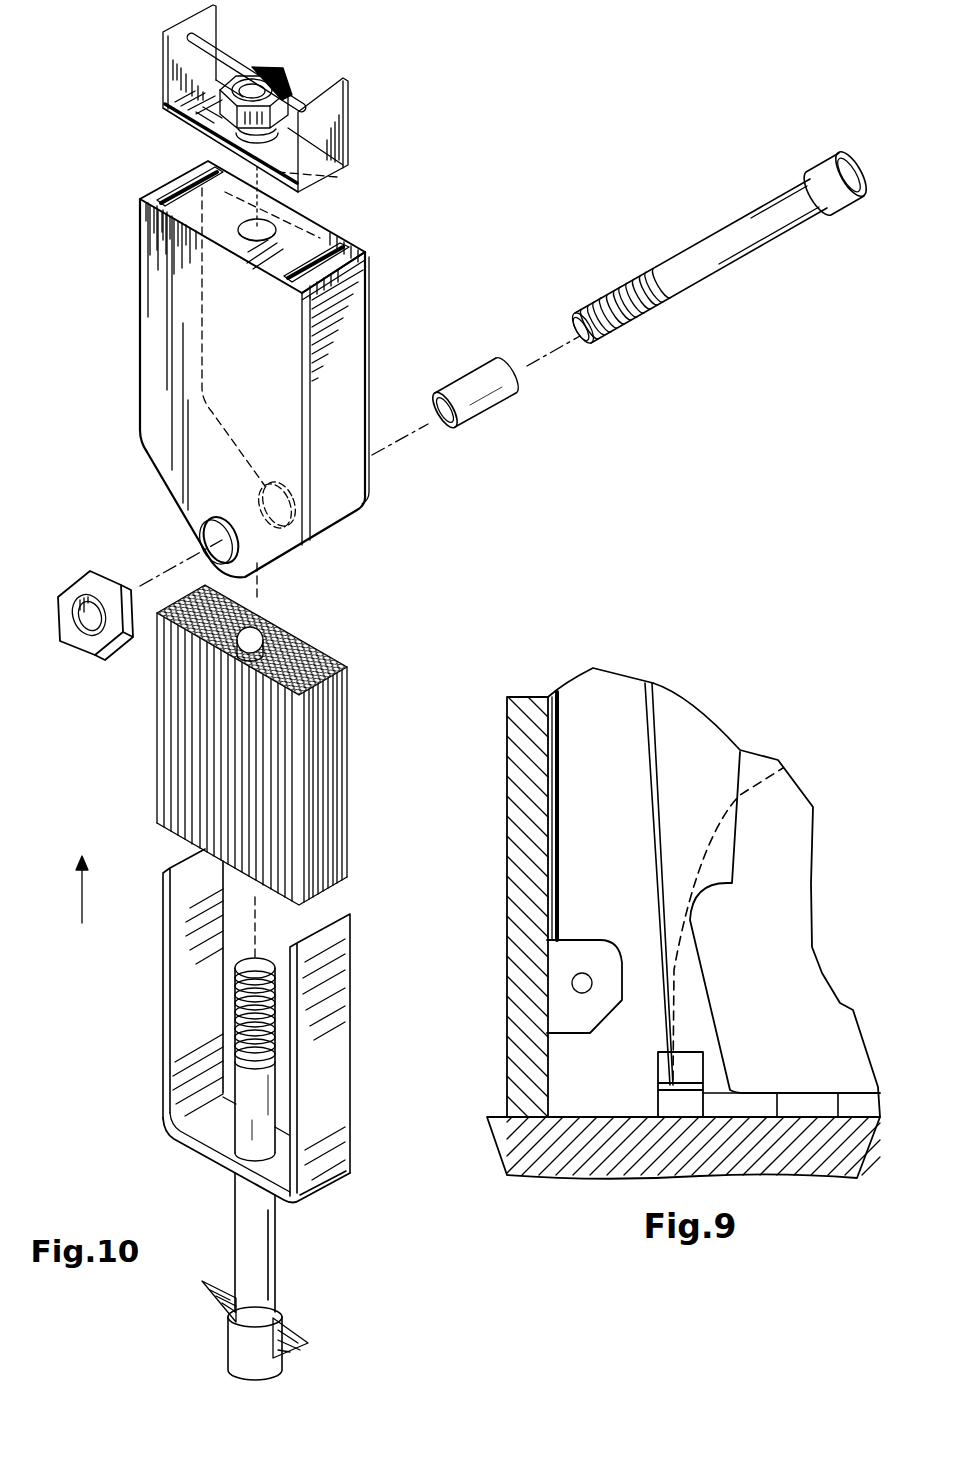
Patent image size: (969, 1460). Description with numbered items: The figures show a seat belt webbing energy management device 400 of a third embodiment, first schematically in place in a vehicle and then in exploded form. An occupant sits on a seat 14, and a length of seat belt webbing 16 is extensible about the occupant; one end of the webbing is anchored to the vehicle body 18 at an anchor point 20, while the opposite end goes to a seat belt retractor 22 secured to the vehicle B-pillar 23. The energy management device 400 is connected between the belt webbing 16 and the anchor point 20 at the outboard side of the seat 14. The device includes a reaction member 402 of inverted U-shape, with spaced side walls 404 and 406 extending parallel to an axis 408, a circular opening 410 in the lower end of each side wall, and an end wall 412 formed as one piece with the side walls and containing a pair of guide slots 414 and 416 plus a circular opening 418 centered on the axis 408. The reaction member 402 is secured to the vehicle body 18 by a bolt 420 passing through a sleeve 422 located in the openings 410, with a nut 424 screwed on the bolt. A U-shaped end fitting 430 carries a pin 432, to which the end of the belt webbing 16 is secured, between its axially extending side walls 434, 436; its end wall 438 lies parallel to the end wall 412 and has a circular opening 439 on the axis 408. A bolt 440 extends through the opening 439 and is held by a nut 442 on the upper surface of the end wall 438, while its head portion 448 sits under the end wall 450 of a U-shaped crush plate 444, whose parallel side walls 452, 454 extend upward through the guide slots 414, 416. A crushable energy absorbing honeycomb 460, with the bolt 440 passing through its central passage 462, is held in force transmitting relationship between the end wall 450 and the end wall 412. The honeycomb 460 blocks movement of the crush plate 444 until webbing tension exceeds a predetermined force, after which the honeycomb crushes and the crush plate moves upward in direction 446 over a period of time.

In FIG. 10, the seat belt webbing energy management device 400 is at (45, 318).
In FIG. 9, the seat belt webbing energy management device 400 is at (692, 1063).
In FIG. 10, the reaction member 402 is at (128, 270).
In FIG. 10, the side wall 404 is at (367, 371).
In FIG. 10, the side wall 406 is at (140, 398).
In FIG. 10, the axis 408 is at (337, 177).
In FIG. 10, the circular opening 410 is at (262, 485).
In FIG. 10, the end wall 412 is at (330, 232).
In FIG. 10, the guide slot 414 is at (330, 270).
In FIG. 10, the guide slot 416 is at (178, 182).
In FIG. 10, the circular opening 418 is at (290, 233).
In FIG. 10, the bolt 420 is at (707, 272).
In FIG. 10, the sleeve 422 is at (497, 392).
In FIG. 10, the nut 424 is at (103, 653).
In FIG. 10, the U-shaped end fitting 430 is at (338, 52).
In FIG. 10, the pin 432 is at (213, 78).
In FIG. 10, the side wall 434 is at (350, 93).
In FIG. 10, the side wall 436 is at (221, 100).
In FIG. 10, the end wall 438 is at (210, 133).
In FIG. 10, the circular opening 439 is at (330, 152).
In FIG. 10, the nut 442 is at (213, 78).
In FIG. 10, the bolt 440 is at (290, 1227).
In FIG. 10, the crush plate 444 is at (150, 979).
In FIG. 10, the direction 446 is at (82, 893).
In FIG. 10, the head portion 448 is at (310, 1328).
In FIG. 10, the end wall 450 is at (217, 1168).
In FIG. 10, the side wall 452 is at (353, 1105).
In FIG. 10, the side wall 454 is at (157, 1042).
In FIG. 10, the crushable energy absorbing honeycomb 460 is at (143, 733).
In FIG. 10, the central passage 462 is at (268, 636).
In FIG. 9, the seat 14 is at (778, 882).
In FIG. 9, the seat belt webbing 16 is at (660, 765).
In FIG. 9, the vehicle body 18 is at (610, 1143).
In FIG. 9, the anchor point 20 is at (700, 1105).
In FIG. 9, the seat belt retractor 22 is at (590, 950).
In FIG. 9, the vehicle B-pillar 23 is at (552, 818).